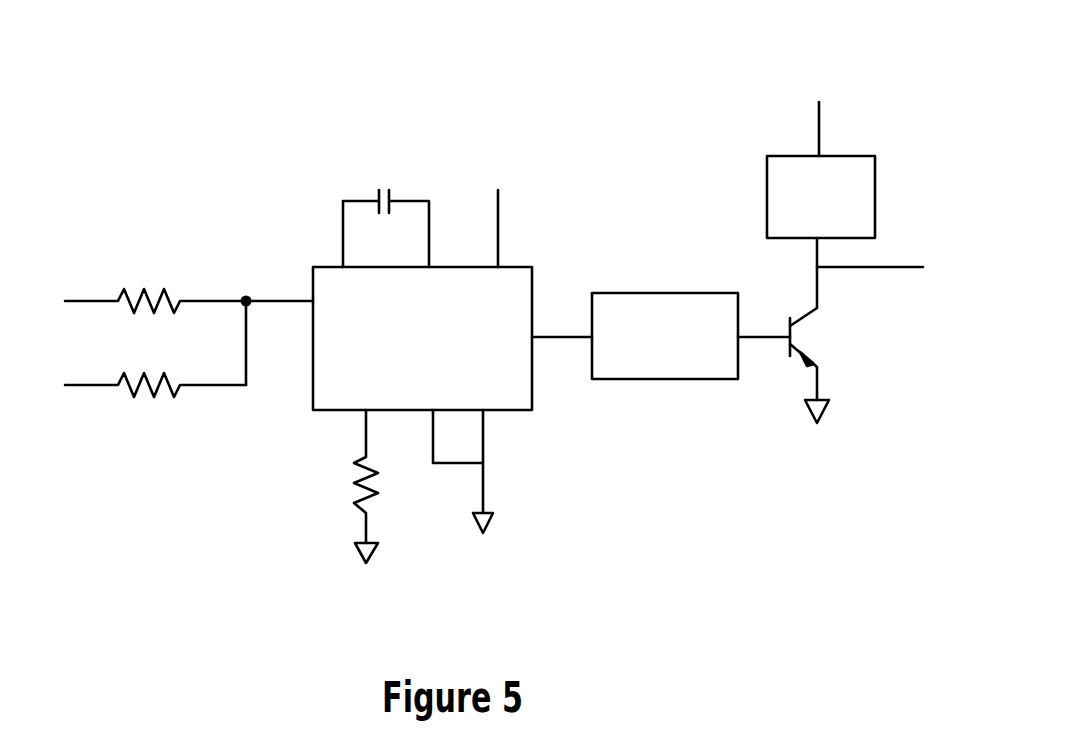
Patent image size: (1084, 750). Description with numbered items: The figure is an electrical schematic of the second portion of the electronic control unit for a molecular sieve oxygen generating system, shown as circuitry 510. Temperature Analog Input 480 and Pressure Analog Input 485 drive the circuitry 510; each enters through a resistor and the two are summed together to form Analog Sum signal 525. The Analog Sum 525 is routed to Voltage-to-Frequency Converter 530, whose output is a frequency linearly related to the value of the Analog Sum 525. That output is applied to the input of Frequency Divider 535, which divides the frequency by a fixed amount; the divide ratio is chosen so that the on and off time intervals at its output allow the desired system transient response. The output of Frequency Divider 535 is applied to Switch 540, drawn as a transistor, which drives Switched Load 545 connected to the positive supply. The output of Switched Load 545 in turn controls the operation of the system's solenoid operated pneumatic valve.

The circuitry 510 is at (465, 33).
The Temperature Analog Input 480 is at (58, 284).
The Pressure Analog Input 485 is at (58, 393).
The Analog Sum signal 525 is at (240, 388).
The Voltage-to-Frequency Converter 530 is at (520, 267).
The Frequency Divider 535 is at (673, 380).
The Switch 540 is at (795, 366).
The Switched Load 545 is at (855, 157).